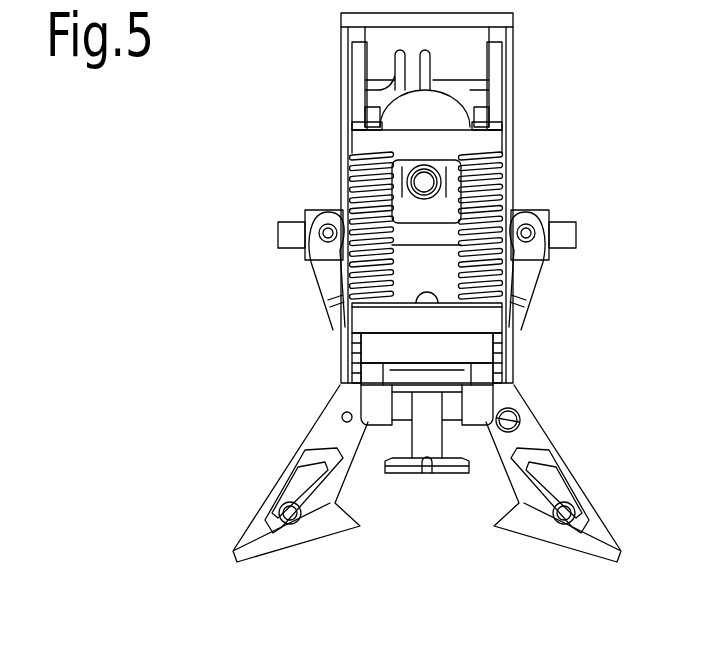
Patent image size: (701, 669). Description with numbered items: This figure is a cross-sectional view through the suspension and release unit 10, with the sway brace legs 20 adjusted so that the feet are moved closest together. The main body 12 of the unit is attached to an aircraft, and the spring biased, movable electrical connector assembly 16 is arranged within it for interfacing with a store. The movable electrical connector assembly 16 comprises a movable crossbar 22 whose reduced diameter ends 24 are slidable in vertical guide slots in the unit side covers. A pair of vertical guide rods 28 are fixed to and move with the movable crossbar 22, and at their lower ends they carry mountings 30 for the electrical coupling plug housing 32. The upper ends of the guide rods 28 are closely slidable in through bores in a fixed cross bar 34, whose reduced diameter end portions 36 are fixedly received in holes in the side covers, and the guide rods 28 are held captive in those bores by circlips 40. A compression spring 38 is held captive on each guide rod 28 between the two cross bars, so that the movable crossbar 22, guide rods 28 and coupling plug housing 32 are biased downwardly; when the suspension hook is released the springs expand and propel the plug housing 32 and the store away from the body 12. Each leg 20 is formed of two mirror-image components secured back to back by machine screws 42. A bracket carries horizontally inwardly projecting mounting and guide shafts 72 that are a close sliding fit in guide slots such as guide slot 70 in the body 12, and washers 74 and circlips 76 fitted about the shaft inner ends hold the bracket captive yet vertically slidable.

The suspension and release unit 10 is at (545, 62).
The main body 12 is at (343, 53).
The movable electrical connector assembly 16 is at (426, 500).
The adjustable leg 20 is at (318, 418).
The movable crossbar 22 is at (370, 320).
The reduced diameter ends 24 is at (520, 318).
The vertical guide rods 28 is at (368, 375).
The mountings 30 is at (480, 400).
The electrical coupling plug housing 32 is at (415, 438).
The fixed cross bar 34 is at (484, 136).
The reduced diameter end portions 36 is at (514, 143).
The compression spring 38 is at (352, 160).
The circlips 40 is at (358, 125).
The machine screws 42 is at (342, 420).
The guide slot 70 is at (426, 291).
The mounting and guide shafts 72 is at (424, 182).
The washers 74 is at (410, 193).
The circlips 76 is at (440, 190).